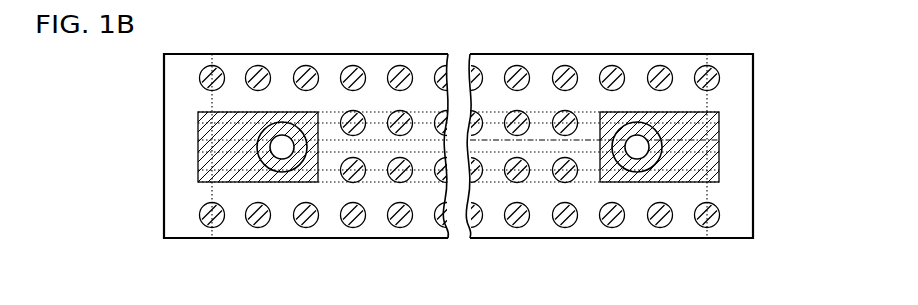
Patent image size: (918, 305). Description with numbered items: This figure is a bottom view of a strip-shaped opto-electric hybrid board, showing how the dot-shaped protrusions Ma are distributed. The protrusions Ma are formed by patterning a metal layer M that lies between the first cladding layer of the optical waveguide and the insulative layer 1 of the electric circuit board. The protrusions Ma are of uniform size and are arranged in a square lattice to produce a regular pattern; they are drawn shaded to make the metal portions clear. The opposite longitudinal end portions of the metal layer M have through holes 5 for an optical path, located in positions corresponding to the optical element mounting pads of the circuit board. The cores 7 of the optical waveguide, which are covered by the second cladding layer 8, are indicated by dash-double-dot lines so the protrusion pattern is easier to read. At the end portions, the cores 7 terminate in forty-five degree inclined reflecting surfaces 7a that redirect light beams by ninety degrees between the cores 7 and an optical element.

The insulative layer 1 is at (175, 228).
The through hole for an optical path 5 is at (238, 112).
The core 7 is at (538, 114).
The reflecting surface 7a is at (283, 182).
The second cladding layer 8 is at (707, 192).
The metal layer M is at (333, 112).
The dot-shaped protrusions Ma is at (431, 70).